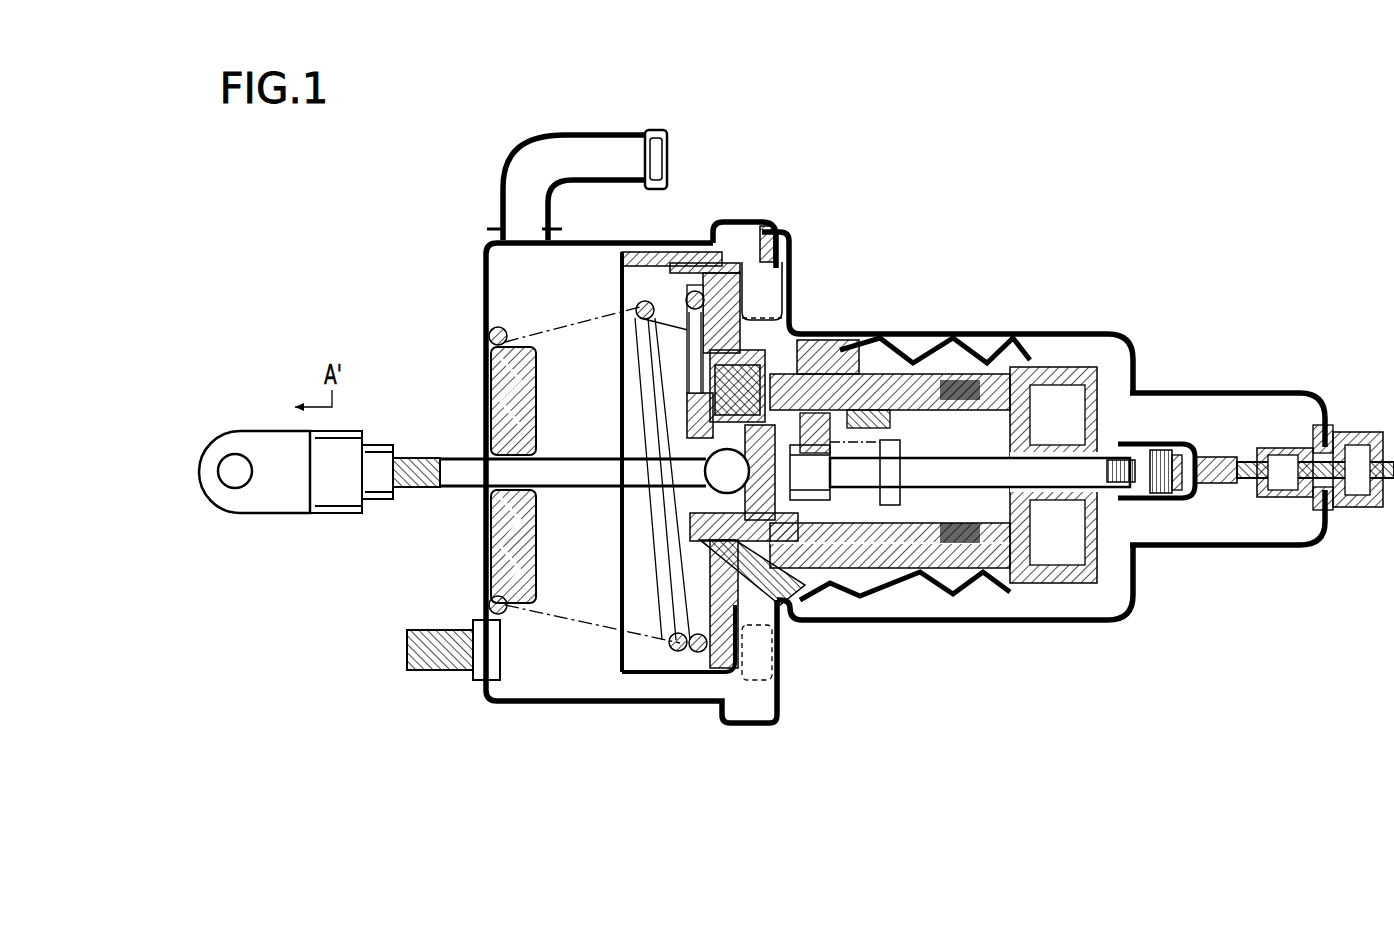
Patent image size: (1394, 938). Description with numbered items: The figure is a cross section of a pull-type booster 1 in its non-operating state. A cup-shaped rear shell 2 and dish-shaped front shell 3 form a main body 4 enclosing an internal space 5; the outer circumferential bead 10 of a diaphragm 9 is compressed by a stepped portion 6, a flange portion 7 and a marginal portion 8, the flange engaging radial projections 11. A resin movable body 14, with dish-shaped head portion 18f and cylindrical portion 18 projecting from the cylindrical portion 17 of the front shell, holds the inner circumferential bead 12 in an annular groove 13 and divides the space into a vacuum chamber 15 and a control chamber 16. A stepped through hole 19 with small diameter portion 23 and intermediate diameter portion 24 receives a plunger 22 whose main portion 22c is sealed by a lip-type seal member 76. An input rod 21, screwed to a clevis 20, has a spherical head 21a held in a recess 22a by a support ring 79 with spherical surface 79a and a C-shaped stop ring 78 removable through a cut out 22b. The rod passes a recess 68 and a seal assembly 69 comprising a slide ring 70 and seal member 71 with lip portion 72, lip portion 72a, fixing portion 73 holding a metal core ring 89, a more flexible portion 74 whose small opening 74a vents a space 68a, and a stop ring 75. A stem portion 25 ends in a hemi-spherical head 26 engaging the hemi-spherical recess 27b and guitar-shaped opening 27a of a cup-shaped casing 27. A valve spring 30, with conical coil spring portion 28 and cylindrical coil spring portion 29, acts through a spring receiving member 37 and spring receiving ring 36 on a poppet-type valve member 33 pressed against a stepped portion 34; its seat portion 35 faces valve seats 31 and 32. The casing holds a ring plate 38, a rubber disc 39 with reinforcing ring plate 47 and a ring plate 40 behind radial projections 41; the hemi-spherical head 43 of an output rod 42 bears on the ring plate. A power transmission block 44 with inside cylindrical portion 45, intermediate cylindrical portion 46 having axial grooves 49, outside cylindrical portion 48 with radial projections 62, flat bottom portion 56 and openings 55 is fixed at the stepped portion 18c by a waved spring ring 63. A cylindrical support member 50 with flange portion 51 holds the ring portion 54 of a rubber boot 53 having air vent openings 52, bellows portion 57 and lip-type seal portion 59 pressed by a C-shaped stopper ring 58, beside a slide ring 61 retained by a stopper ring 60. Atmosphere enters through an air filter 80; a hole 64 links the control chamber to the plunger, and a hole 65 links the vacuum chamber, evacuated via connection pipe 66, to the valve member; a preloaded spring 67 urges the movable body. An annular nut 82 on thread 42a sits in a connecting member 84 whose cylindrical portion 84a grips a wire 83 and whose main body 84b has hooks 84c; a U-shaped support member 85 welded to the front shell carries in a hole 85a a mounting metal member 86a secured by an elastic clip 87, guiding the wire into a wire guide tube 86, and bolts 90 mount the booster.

The pull-type booster 1 is at (462, 160).
The rear shell 2 is at (485, 275).
The front shell 3 is at (800, 300).
The main body 4 is at (620, 240).
The internal space 5 is at (512, 300).
The stepped portion 6 is at (712, 232).
The flange portion 7 is at (790, 255).
The marginal portion 8 is at (752, 226).
The diaphragm 9 is at (618, 255).
The outer circumferential bead 10 is at (725, 226).
The radial projections 11 is at (768, 228).
The inner circumferential bead 12 is at (760, 330).
The annular groove 13 is at (690, 340).
The movable body 14 is at (790, 350).
The vacuum chamber 15 is at (524, 297).
The control chamber 16 is at (754, 304).
The cylindrical portion 17 is at (840, 355).
The cylindrical portion 18 is at (875, 372).
The stepped portion 18c is at (1010, 375).
The head portion 18f is at (686, 300).
The stepped through hole 19 is at (905, 375).
The clevis 20 is at (262, 495).
The input rod 21 is at (555, 487).
The spherical head 21a is at (690, 500).
The plunger 22 is at (700, 515).
The recess 22a is at (770, 485).
The cut out 22b is at (700, 430).
The main portion 22c is at (695, 400).
The small diameter portion 23 is at (700, 505).
The intermediate diameter portion 24 is at (745, 410).
The stem portion 25 is at (910, 614).
The hemi-spherical head 26 is at (905, 470).
The cup-shaped casing 27 is at (1040, 590).
The guitar-shaped opening 27a is at (905, 595).
The hemi-spherical recess 27b is at (950, 350).
The conical coil spring portion 28 is at (985, 455).
The cylindrical coil spring portion 29 is at (880, 580).
The valve spring 30 is at (930, 550).
The valve seat 31 is at (762, 556).
The valve seat 32 is at (742, 490).
The poppet-type valve member 33 is at (860, 583).
The stepped portion 34 is at (875, 580).
The seat portion 35 is at (750, 462).
The spring receiving ring 36 is at (805, 540).
The spring receiving member 37 is at (913, 345).
The ring plate 38 is at (1010, 590).
The rubber disc 39 is at (983, 345).
The ring plate 40 is at (1030, 570).
The radial projections 41 is at (1000, 393).
The output rod 42 is at (1140, 447).
The thread 42a is at (1125, 485).
The hemi-spherical head 43 is at (975, 545).
The power transmission block 44 is at (1120, 555).
The inside cylindrical portion 45 is at (1140, 500).
The intermediate cylindrical portion 46 is at (1055, 575).
The reinforcing ring plate 47 is at (1045, 515).
The outside cylindrical portion 48 is at (1050, 555).
The axial grooves 49 is at (1060, 365).
The cylindrical support member 50 is at (1140, 385).
The flange portion 51 is at (1120, 395).
The air vent openings 52 is at (1150, 330).
The rubber boot 53 is at (985, 385).
The ring portion 54 is at (1138, 560).
The openings 55 is at (1133, 345).
The flat bottom portion 56 is at (1145, 590).
The flexible bellows portion 57 is at (888, 393).
The C-shaped stopper ring 58 is at (858, 352).
The lip-type seal portion 59 is at (838, 393).
The stopper ring 60 is at (800, 340).
The slide ring 61 is at (795, 393).
The radial projections 62 is at (1045, 400).
The waved spring ring 63 is at (1100, 610).
The hole 64 is at (750, 372).
The hole 65 is at (700, 550).
The connection pipe 66 is at (582, 130).
The preloaded spring 67 is at (675, 645).
The recess 68 is at (497, 605).
The space 68a is at (530, 385).
The seal assembly 69 is at (490, 520).
The slide ring 70 is at (530, 440).
The seal member 71 is at (508, 530).
The lip portion 72 is at (500, 495).
The lip portion 72a is at (530, 545).
The fixing portion 73 is at (532, 600).
The more flexible portion 74 is at (512, 412).
The small opening 74a is at (508, 390).
The stop ring 75 is at (500, 372).
The lip-type seal member 76 is at (705, 525).
The C-shaped stop ring 78 is at (695, 450).
The support ring 79 is at (700, 462).
The spherical surface 79a is at (700, 505).
The air filter 80 is at (955, 585).
The annular nut 82 is at (1165, 493).
The wire 83 is at (1245, 480).
The connecting member 84 is at (1195, 440).
The cylindrical portion 84a is at (1215, 457).
The main body 84b is at (1182, 440).
The hooks 84c is at (1170, 395).
The U-shaped support member 85 is at (1300, 390).
The hole 85a is at (1345, 535).
The wire guide tube 86 is at (1368, 430).
The mounting metal member 86a is at (1320, 520).
The U-shaped elastic clip 87 is at (1318, 430).
The metal core ring 89 is at (495, 345).
The bolts 90 is at (445, 690).